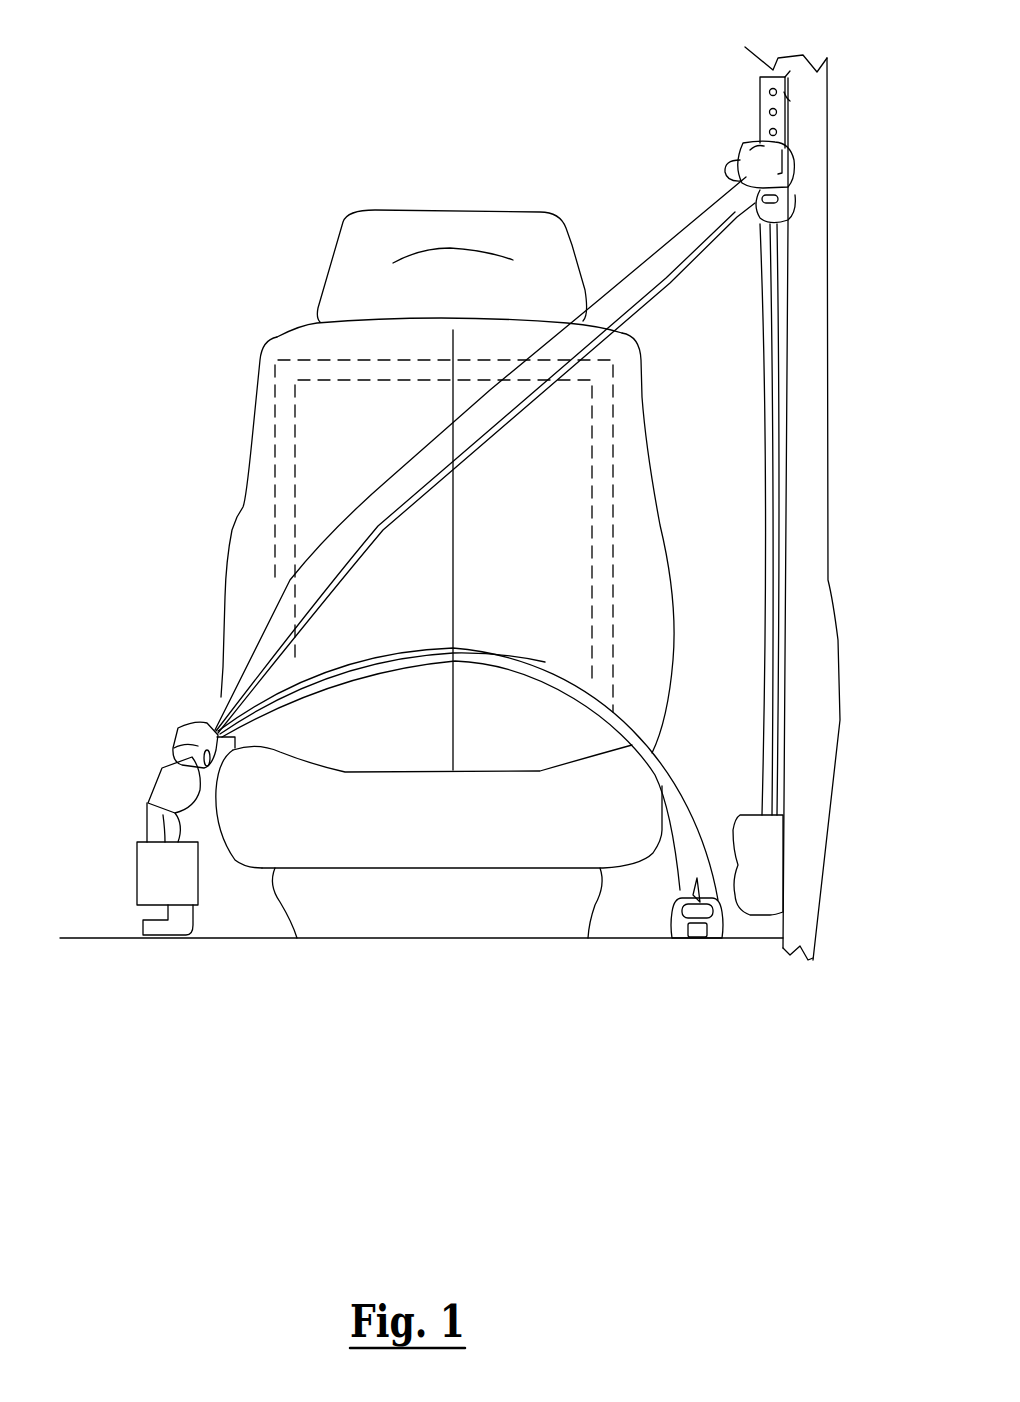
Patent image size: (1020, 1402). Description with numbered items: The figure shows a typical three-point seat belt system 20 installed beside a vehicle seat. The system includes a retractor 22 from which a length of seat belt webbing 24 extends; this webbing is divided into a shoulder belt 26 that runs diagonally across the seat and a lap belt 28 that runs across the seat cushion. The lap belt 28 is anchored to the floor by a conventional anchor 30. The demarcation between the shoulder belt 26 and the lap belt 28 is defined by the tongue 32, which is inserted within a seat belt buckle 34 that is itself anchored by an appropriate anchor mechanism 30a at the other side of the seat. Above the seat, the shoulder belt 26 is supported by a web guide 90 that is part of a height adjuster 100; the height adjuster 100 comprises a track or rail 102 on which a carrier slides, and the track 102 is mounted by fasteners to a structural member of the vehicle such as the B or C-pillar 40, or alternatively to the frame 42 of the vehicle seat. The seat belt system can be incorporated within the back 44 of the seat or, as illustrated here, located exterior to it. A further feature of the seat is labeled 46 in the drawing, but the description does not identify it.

The three-point seat belt system 20 is at (140, 231).
The retractor 22 is at (758, 848).
The seat belt webbing 24 is at (444, 536).
The shoulder belt 26 is at (621, 271).
The lap belt 28 is at (483, 656).
The anchor 30 is at (672, 915).
The anchor mechanism 30a is at (178, 940).
The tongue 32 is at (175, 742).
The seat belt buckle 34 is at (150, 792).
The B or C-pillar 40 is at (813, 147).
The frame of a vehicle seat 42 is at (263, 458).
The back of the seat 44 is at (257, 383).
The seat back upper portion 46 is at (310, 343).
The web guide 90 is at (745, 150).
The height adjuster 100 is at (747, 102).
The track or rail 102 is at (786, 95).